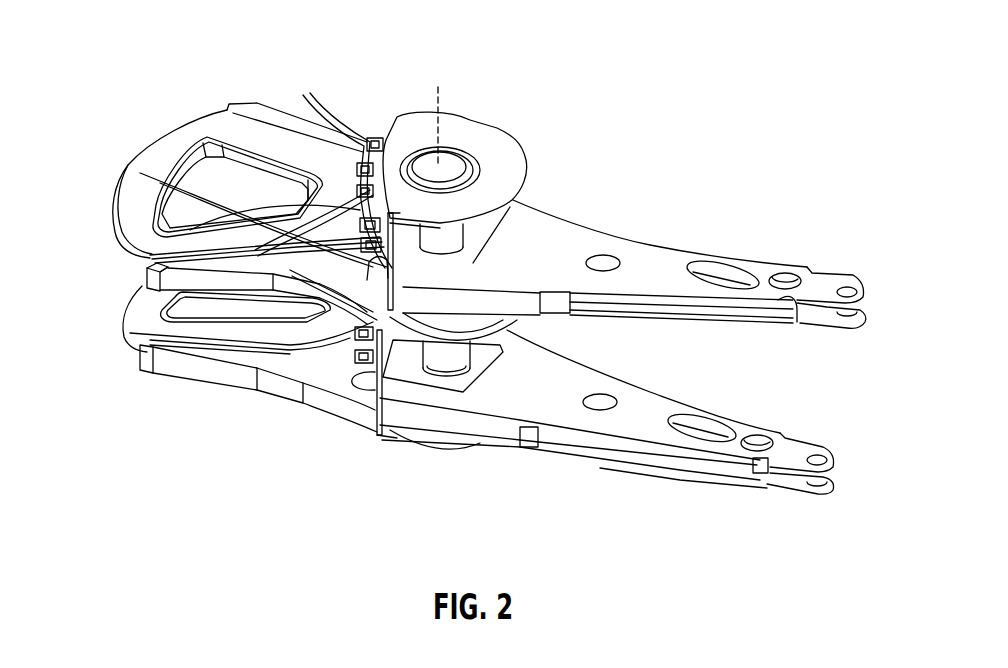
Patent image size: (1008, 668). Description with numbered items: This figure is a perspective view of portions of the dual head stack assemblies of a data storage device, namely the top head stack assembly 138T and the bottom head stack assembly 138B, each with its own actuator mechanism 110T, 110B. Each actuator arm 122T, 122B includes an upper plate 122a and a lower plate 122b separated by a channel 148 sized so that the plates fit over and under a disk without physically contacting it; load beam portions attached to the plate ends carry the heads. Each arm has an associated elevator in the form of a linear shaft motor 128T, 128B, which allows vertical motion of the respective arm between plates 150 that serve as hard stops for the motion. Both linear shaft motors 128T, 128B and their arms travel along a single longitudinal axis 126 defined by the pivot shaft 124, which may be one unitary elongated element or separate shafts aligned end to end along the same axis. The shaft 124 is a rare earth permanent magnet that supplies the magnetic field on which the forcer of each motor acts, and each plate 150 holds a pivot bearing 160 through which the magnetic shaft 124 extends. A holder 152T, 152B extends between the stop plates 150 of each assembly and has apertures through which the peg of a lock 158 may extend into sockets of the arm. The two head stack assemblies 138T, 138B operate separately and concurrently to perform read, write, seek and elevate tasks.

The top head stack assembly 138T is at (133, 136).
The bottom head stack assembly 138B is at (128, 288).
The actuator mechanism 110T is at (188, 133).
The actuator mechanism 110B is at (127, 337).
The stop plate 150 is at (140, 173).
The pivot bearing 160 is at (473, 152).
The longitudinal axis 126 is at (437, 87).
The pivot shaft 124 is at (522, 195).
The lock 158 is at (362, 193).
The holder 152T is at (373, 140).
The holder 152B is at (377, 382).
The linear shaft motor 128T is at (510, 212).
The linear shaft motor 128B is at (468, 380).
The actuator arm 122T is at (623, 232).
The actuator arm 122B is at (629, 385).
The upper plate 122a is at (747, 260).
The lower plate 122b is at (777, 313).
The channel 148 is at (617, 303).